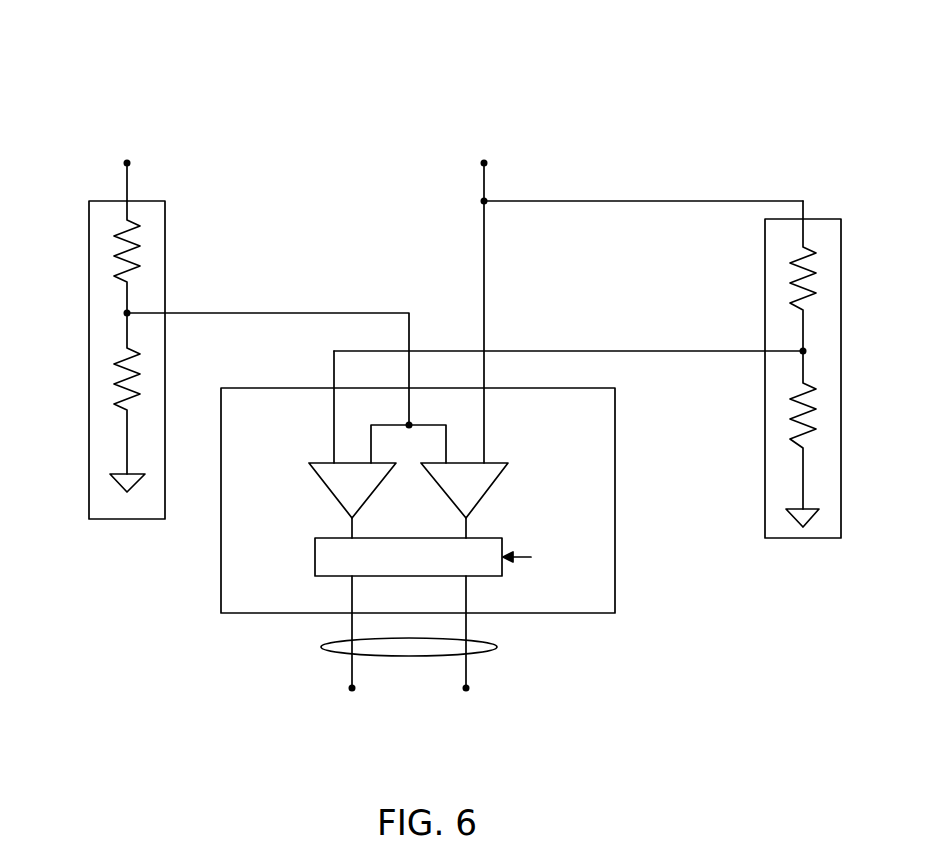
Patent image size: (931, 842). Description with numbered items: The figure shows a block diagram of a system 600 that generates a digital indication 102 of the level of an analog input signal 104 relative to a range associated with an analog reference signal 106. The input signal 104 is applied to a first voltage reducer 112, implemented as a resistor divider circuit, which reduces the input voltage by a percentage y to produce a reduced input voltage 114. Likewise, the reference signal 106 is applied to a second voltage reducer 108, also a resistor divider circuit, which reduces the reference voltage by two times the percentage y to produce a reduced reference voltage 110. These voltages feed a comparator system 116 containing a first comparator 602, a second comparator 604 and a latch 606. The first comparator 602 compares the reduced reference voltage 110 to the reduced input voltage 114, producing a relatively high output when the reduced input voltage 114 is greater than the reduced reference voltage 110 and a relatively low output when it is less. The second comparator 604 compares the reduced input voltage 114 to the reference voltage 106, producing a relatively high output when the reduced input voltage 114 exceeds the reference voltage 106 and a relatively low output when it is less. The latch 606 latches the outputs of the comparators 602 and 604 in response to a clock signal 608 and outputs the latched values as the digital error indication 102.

The system 600 is at (152, 64).
The digital indication 102 is at (321, 648).
The analog input signal 104 is at (130, 163).
The analog reference signal 106 is at (483, 163).
The second voltage reducer 108 is at (765, 258).
The reduced reference voltage 110 is at (477, 350).
The first voltage reducer 112 is at (165, 238).
The reduced input voltage 114 is at (380, 311).
The comparator system 116 is at (288, 388).
The first comparator 602 is at (310, 462).
The second comparator 604 is at (498, 463).
The latch 606 is at (453, 567).
The clock signal 608 is at (517, 557).